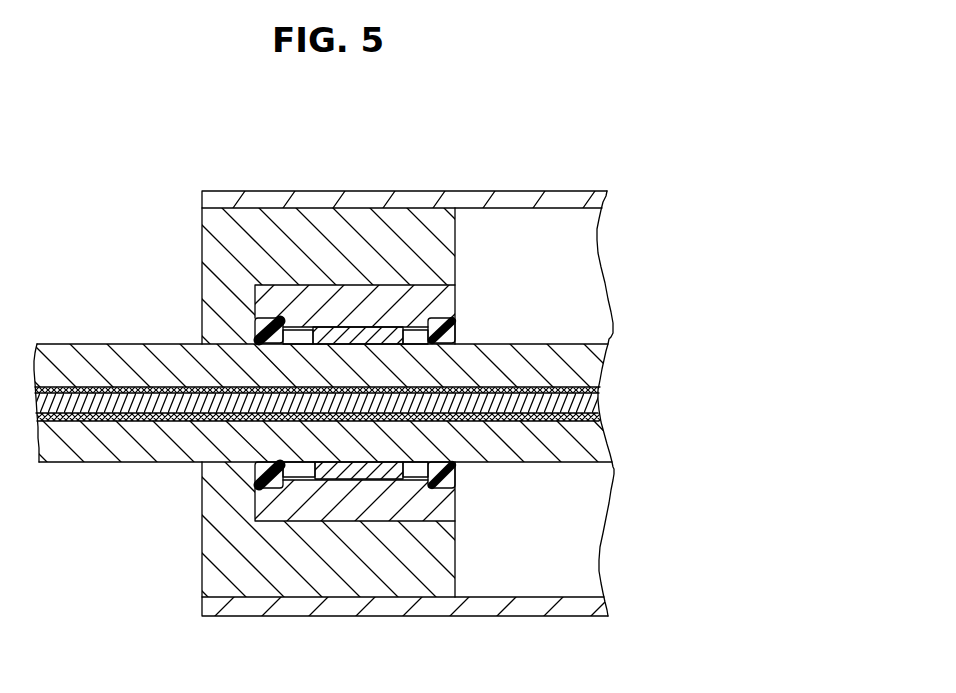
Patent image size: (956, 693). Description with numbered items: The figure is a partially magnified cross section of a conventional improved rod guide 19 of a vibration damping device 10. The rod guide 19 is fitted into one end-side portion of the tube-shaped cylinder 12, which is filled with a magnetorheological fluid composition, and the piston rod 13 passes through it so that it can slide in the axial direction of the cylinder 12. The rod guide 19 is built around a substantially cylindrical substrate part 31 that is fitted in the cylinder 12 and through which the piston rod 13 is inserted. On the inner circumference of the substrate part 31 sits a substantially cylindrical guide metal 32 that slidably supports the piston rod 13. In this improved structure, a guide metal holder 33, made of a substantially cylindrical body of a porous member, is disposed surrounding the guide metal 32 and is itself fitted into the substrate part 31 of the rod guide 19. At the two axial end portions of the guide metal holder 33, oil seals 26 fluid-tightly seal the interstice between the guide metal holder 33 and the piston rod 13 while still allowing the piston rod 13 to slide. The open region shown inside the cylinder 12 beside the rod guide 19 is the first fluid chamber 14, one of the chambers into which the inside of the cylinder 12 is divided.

The vibration damping device 10 is at (519, 169).
The cylinder 12 is at (480, 616).
The piston rod 13 is at (136, 463).
The first fluid chamber 14 is at (548, 293).
The rod guide 19 is at (202, 564).
The oil seal 26 is at (262, 337).
The substrate part 31 is at (293, 583).
The guide metal 32 is at (363, 468).
The guide metal holder 33 is at (352, 307).